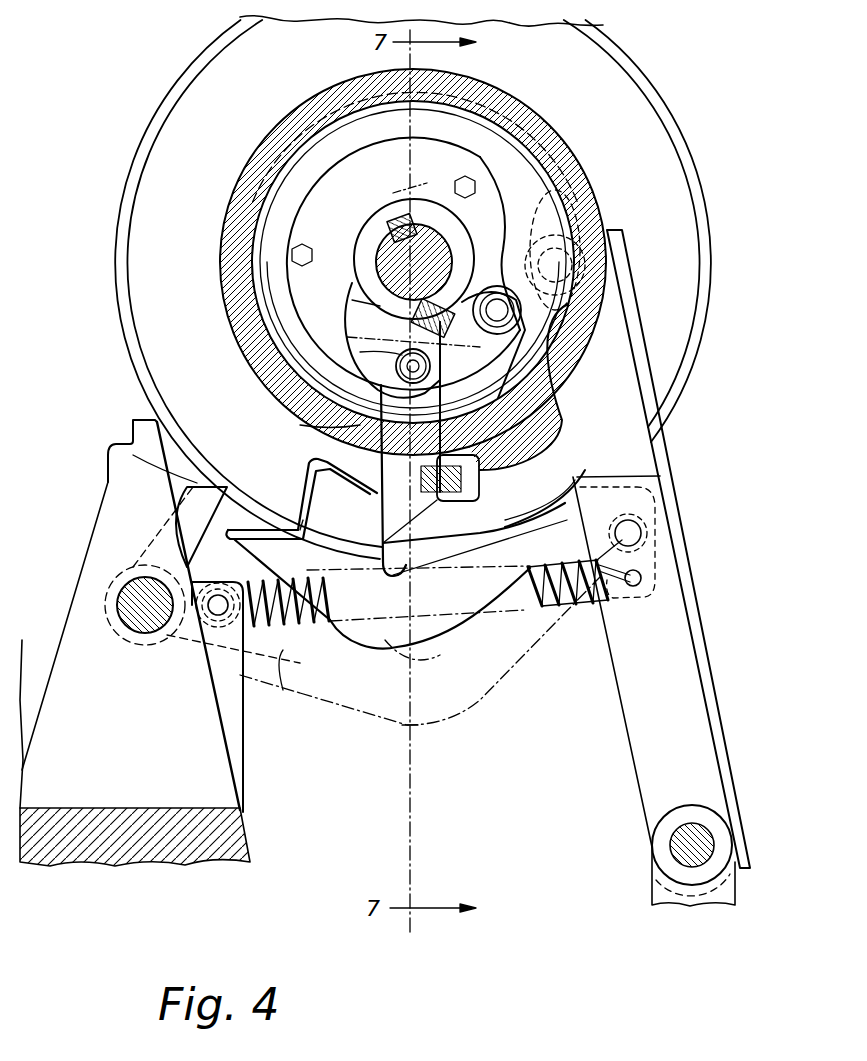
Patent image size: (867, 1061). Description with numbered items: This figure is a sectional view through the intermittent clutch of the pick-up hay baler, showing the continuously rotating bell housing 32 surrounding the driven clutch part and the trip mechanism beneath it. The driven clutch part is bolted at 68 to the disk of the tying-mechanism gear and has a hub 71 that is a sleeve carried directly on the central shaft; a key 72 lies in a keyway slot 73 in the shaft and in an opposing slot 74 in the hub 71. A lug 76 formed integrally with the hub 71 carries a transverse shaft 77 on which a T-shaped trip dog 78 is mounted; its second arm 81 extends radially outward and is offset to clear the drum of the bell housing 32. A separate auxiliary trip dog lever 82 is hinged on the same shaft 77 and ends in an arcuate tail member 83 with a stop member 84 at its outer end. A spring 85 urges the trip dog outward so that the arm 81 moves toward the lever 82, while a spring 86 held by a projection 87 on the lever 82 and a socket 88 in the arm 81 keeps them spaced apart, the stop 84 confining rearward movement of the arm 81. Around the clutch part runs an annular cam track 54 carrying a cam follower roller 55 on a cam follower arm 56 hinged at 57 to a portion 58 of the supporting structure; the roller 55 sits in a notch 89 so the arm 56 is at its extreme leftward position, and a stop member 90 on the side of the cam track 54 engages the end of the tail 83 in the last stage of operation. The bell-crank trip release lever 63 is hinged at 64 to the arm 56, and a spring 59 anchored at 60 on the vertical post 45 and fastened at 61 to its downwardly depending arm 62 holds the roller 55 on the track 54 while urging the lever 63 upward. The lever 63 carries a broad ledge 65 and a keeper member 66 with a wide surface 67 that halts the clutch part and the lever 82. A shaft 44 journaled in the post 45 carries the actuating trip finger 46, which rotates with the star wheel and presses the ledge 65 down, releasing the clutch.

The bell housing 32 is at (555, 114).
The shaft 44 is at (125, 632).
The vertical post 45 is at (118, 481).
The actuating trip finger 46 is at (110, 455).
The cam track 54 is at (236, 190).
The cam follower roller 55 is at (583, 170).
The cam follower arm 56 is at (630, 425).
The hinge mounting 57 is at (706, 836).
The portion of supporting structure 58 is at (737, 888).
The spring 59 is at (297, 660).
The spring anchor 60 is at (220, 590).
The spring fastening 61 is at (645, 581).
The downwardly depending arm 62 is at (657, 570).
The trip release lever 63 is at (385, 645).
The hinge 64 is at (640, 528).
The broad ledge 65 is at (274, 530).
The keeper member 66 is at (305, 460).
The wide surface 67 is at (300, 422).
The bolt 68 is at (303, 244).
The hub 71 is at (370, 248).
The key 72 is at (398, 214).
The keyway slot 73 is at (419, 213).
The slot 74 is at (378, 228).
The lug 76 is at (380, 330).
The transverse shaft 77 is at (398, 350).
The trip dog 78 is at (414, 317).
The second arm 81 is at (396, 370).
The auxiliary trip dog lever 82 is at (390, 366).
The tail member 83 is at (462, 470).
The stop member 84 is at (524, 506).
The spring 85 is at (380, 304).
The spring 86 is at (430, 470).
The projection 87 is at (426, 540).
The socket 88 is at (478, 476).
The notch 89 is at (578, 206).
The stop member 90 is at (555, 458).